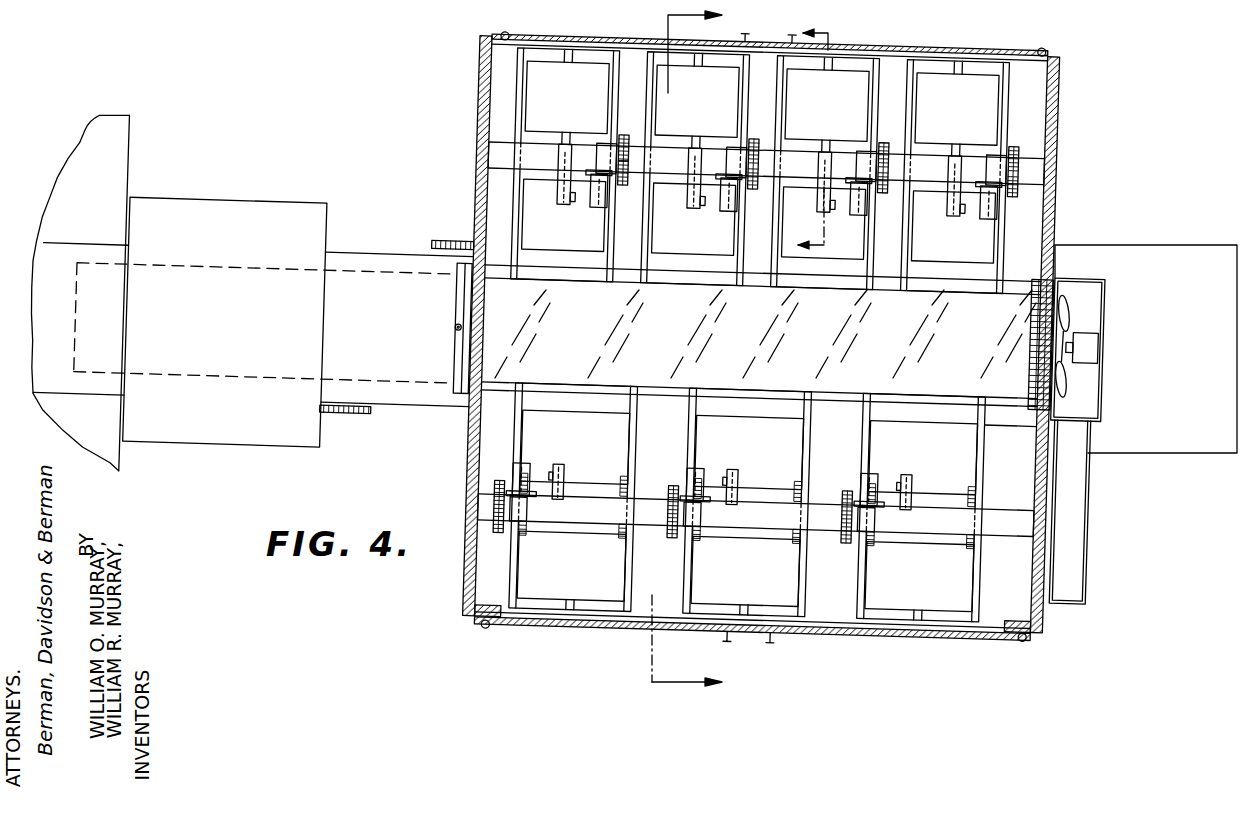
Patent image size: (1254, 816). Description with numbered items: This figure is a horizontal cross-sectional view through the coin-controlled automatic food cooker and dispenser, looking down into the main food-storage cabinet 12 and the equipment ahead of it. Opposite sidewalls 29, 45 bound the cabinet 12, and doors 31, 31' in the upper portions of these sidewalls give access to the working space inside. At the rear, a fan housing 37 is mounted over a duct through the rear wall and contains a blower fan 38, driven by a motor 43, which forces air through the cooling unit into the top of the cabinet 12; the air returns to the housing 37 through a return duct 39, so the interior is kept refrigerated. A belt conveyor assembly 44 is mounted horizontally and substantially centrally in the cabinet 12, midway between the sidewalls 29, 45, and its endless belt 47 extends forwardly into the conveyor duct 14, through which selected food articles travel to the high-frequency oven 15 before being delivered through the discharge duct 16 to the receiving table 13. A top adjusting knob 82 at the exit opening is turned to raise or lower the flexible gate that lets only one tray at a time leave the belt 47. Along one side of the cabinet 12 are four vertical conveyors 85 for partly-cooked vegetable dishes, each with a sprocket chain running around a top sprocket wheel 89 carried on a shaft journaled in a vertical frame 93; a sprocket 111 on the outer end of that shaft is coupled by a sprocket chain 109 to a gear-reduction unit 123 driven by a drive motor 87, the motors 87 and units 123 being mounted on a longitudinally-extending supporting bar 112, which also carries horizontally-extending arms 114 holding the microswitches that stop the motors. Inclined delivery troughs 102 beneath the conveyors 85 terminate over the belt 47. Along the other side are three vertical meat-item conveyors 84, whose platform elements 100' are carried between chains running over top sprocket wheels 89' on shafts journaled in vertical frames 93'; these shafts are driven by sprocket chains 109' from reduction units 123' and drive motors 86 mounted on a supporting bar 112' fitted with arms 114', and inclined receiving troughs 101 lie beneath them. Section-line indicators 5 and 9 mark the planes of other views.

The section line 5- 5 is at (687, 348).
The section line 9- 9 is at (824, 137).
The main food-storage cabinet 12 is at (463, 620).
The receiving table 13 is at (78, 180).
The conveyor duct 14 is at (358, 257).
The high-frequency cooking oven 15 is at (228, 197).
The discharge duct 16 is at (67, 252).
The sidewall 29 is at (1035, 637).
The door 31 is at (752, 656).
The door 31' is at (770, 38).
The fan housing 37 is at (1092, 278).
The blower fan 38 is at (1066, 325).
The return duct 39 is at (1089, 532).
The driving motor 43 is at (1108, 347).
The belt conveyor assembly 44 is at (837, 404).
The sidewall 45 is at (500, 33).
The endless belt 47 is at (796, 354).
The top adjusting knob 82 is at (453, 326).
The vertical meat-item conveyor 84 is at (918, 418).
The vertical conveyor 85 is at (947, 272).
The drive motor 86 is at (527, 463).
The drive motor 87 is at (597, 197).
The top sprocket wheel 89 is at (552, 182).
The top sprocket wheel 89' is at (734, 528).
The vertical frame 93 is at (708, 169).
The vertical frame 93' is at (771, 502).
The platform element 100' is at (601, 497).
The receiving trough 101 is at (981, 470).
The delivery trough 102 is at (912, 282).
The sprocket chain 109 is at (625, 196).
The sprocket chain 109' is at (833, 537).
The sprocket 111 is at (757, 140).
The supporting bar 112 is at (764, 181).
The supporting bar 112' is at (755, 491).
The horizontally-extending arm 114 is at (749, 190).
The horizontally-extending arm 114' is at (932, 481).
The gear-reduction unit 123 is at (623, 137).
The reduction unit 123' is at (501, 542).